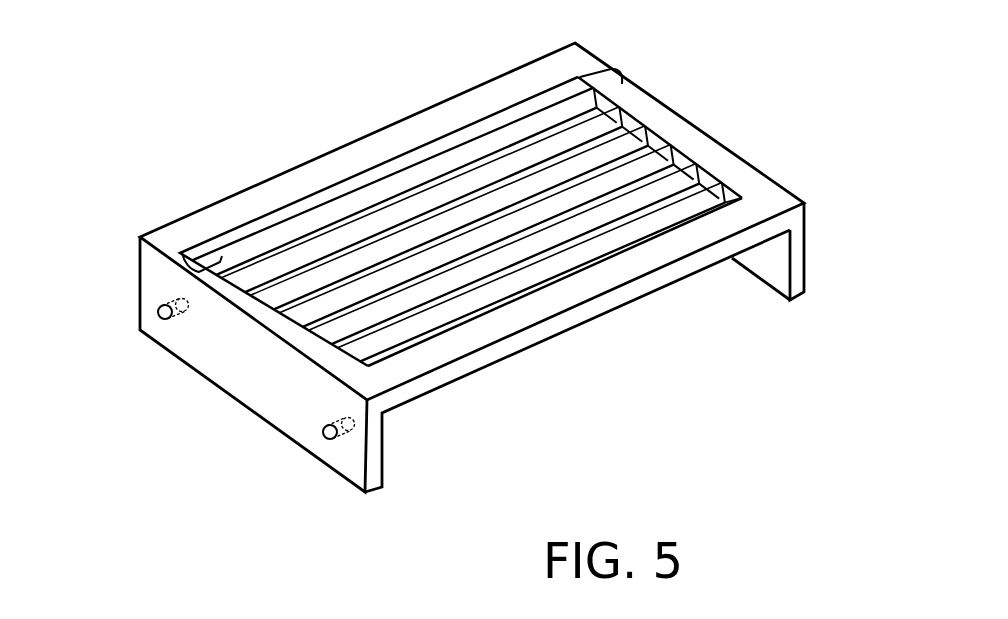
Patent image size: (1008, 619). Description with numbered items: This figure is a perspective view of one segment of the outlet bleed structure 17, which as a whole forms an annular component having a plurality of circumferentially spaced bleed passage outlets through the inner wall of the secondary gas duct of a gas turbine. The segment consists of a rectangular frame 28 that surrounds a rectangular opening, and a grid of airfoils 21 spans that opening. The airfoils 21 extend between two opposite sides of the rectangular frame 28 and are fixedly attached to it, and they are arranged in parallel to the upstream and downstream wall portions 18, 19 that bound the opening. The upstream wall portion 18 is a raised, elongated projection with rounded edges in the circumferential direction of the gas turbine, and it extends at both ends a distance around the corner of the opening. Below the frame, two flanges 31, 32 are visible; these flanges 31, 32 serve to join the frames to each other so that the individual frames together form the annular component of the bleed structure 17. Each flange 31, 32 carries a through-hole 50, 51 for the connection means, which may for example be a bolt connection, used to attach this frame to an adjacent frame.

The bleed structure 17 is at (340, 88).
The upstream wall portion 18 is at (307, 210).
The downstream wall portion 19 is at (445, 353).
The airfoils 21 is at (627, 173).
The rectangular frame 28 is at (737, 167).
The flange 31 is at (268, 413).
The flange 32 is at (762, 265).
The through-hole 50 is at (160, 315).
The through-hole 51 is at (326, 436).